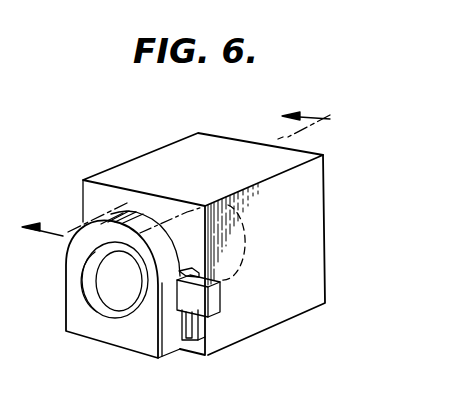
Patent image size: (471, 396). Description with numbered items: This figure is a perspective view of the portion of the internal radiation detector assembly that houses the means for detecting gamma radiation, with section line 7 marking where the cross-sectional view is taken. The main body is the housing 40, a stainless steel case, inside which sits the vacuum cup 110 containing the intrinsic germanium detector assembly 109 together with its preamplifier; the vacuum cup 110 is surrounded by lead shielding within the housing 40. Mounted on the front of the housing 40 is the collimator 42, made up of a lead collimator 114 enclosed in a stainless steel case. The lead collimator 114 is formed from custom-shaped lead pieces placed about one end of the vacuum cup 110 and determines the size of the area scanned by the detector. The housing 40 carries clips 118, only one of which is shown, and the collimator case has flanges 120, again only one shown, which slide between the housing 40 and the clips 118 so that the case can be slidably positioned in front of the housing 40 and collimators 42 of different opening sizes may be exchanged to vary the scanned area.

The housing 40 is at (318, 248).
The collimator 42 is at (131, 358).
The intrinsic germanium detector assembly 109 is at (103, 268).
The vacuum cup 110 is at (246, 282).
The lead collimator 114 is at (88, 300).
The clips 118 is at (200, 303).
The flanges 120 is at (184, 333).
The section line 7— 7 is at (173, 173).